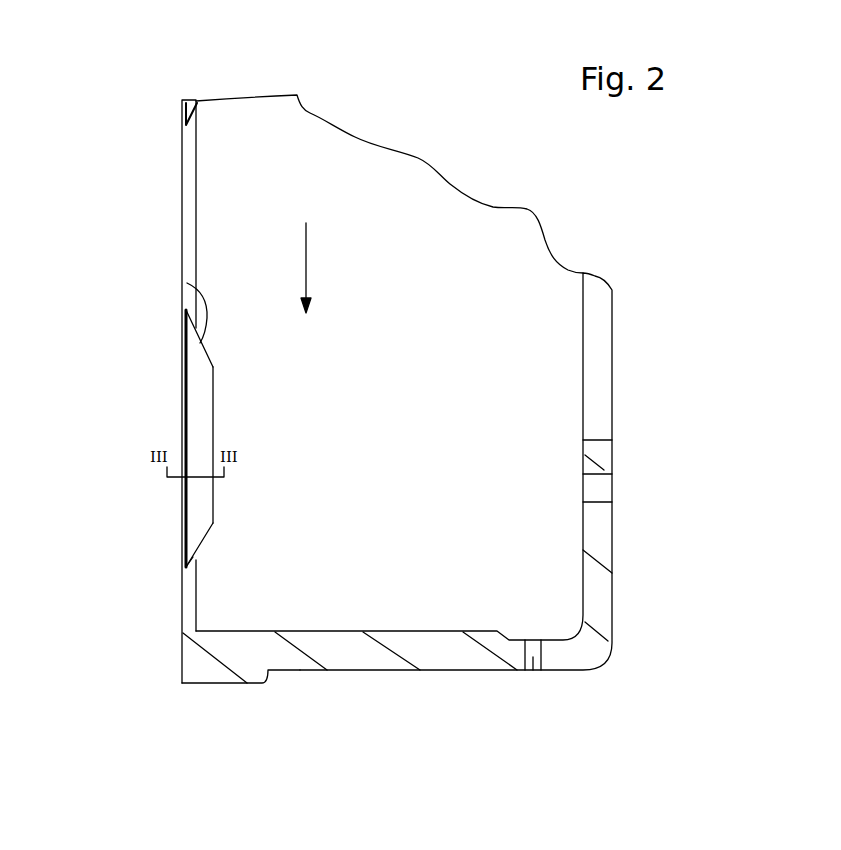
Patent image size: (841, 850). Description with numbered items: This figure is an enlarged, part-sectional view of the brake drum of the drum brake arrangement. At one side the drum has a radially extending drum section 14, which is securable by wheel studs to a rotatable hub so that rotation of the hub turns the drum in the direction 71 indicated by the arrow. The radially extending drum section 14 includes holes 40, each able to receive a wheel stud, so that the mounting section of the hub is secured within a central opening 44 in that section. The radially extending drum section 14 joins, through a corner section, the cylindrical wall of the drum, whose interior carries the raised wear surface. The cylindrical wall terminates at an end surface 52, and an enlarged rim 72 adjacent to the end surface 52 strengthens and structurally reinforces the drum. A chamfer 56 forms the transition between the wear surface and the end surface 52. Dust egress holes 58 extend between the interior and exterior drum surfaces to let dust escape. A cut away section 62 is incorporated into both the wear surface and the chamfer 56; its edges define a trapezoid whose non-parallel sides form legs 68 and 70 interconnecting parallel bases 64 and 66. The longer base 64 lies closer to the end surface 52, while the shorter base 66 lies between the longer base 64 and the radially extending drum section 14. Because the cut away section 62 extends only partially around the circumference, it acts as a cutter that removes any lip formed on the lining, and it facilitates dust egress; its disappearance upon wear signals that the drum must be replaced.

The radially extending drum section 14 is at (600, 543).
The holes 40 is at (600, 488).
The central opening 44 is at (597, 437).
The end surface 52 is at (182, 660).
The chamfer 56 is at (186, 205).
The dust egress holes 58 is at (533, 658).
The cut away sections 62 is at (182, 104).
The longer base 64 is at (186, 510).
The shorter base 66 is at (215, 505).
The leg 68 is at (187, 283).
The leg 70 is at (200, 111).
The direction of rotation 71 is at (306, 258).
The enlarged rim 72 is at (214, 684).